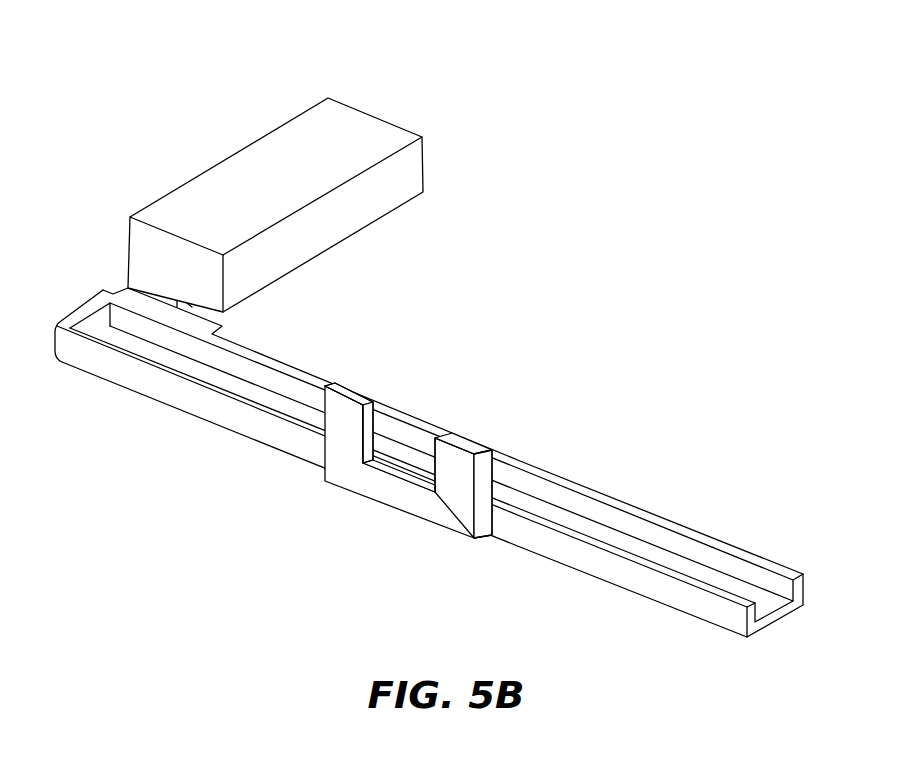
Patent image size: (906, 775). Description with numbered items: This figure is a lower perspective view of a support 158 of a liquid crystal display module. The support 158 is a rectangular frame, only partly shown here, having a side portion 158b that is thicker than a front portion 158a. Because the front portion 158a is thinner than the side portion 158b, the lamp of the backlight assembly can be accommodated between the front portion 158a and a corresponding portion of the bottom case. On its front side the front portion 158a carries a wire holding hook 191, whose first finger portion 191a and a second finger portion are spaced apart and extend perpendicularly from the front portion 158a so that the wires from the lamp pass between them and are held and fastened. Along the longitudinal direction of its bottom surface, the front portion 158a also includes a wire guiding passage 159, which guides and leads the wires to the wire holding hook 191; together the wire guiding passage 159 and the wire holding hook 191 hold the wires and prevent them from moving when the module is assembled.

The support 158 is at (676, 207).
The front portion 158a is at (633, 510).
The side portion 158b is at (352, 140).
The wire guiding passage 159 is at (702, 558).
The wire holding hook 191 is at (490, 348).
The first finger portion 191a is at (350, 413).